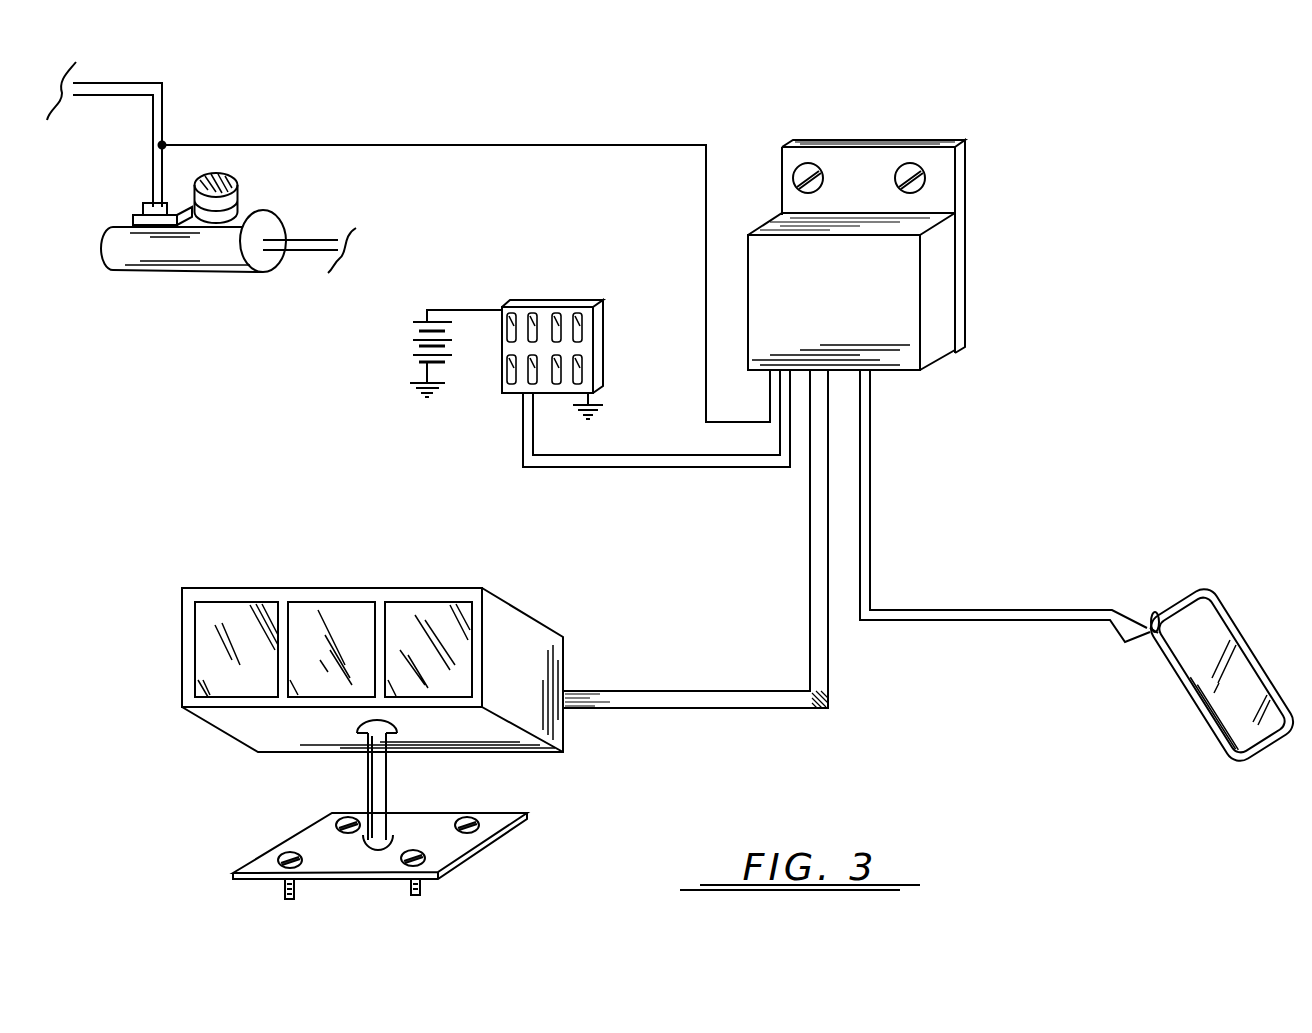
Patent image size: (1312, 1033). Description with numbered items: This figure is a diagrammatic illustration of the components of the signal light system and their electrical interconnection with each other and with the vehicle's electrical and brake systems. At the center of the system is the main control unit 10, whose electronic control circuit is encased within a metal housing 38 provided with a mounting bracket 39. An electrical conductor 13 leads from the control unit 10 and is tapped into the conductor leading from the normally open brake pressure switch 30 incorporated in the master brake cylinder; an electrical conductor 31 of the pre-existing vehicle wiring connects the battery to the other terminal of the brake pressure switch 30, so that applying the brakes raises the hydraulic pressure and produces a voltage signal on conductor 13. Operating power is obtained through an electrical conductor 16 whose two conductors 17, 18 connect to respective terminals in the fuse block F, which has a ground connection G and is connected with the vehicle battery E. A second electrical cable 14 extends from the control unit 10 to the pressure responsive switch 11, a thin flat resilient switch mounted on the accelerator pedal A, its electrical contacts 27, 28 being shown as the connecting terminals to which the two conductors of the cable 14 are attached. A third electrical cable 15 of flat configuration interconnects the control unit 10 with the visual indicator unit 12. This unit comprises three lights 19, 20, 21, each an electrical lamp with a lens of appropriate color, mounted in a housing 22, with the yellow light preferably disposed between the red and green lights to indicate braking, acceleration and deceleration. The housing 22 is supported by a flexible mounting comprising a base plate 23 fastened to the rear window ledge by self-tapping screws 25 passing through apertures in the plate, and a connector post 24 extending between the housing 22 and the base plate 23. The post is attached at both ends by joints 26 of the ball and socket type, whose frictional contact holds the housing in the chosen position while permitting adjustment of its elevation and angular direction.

The main control unit 10 is at (879, 255).
The pressure responsive switch 11 is at (1245, 693).
The visual indicator unit 12 is at (351, 658).
The electrical conductor 13 is at (532, 147).
The electrical cable 14 is at (1013, 613).
The electrical cable 15 is at (727, 690).
The electrical conductor 16 is at (623, 460).
The conductor 17 is at (537, 442).
The conductor 18 is at (520, 442).
The light 19 is at (210, 628).
The light 20 is at (443, 623).
The light 21 is at (347, 627).
The housing 22 is at (277, 727).
The base plate 23 is at (328, 837).
The connector post 24 is at (377, 808).
The self-tapping screws 25 is at (300, 893).
The joints 26 is at (395, 733).
The electrical contact 27 is at (1156, 616).
The electrical contact 28 is at (1153, 637).
The brake pressure switch 30 is at (152, 206).
The electrical conductor 31 is at (128, 90).
The metal housing 38 is at (935, 308).
The mounting bracket 39 is at (942, 175).
The accelerator pedal A is at (1211, 675).
The battery E is at (422, 345).
The fuse block F is at (550, 303).
The ground G is at (600, 418).